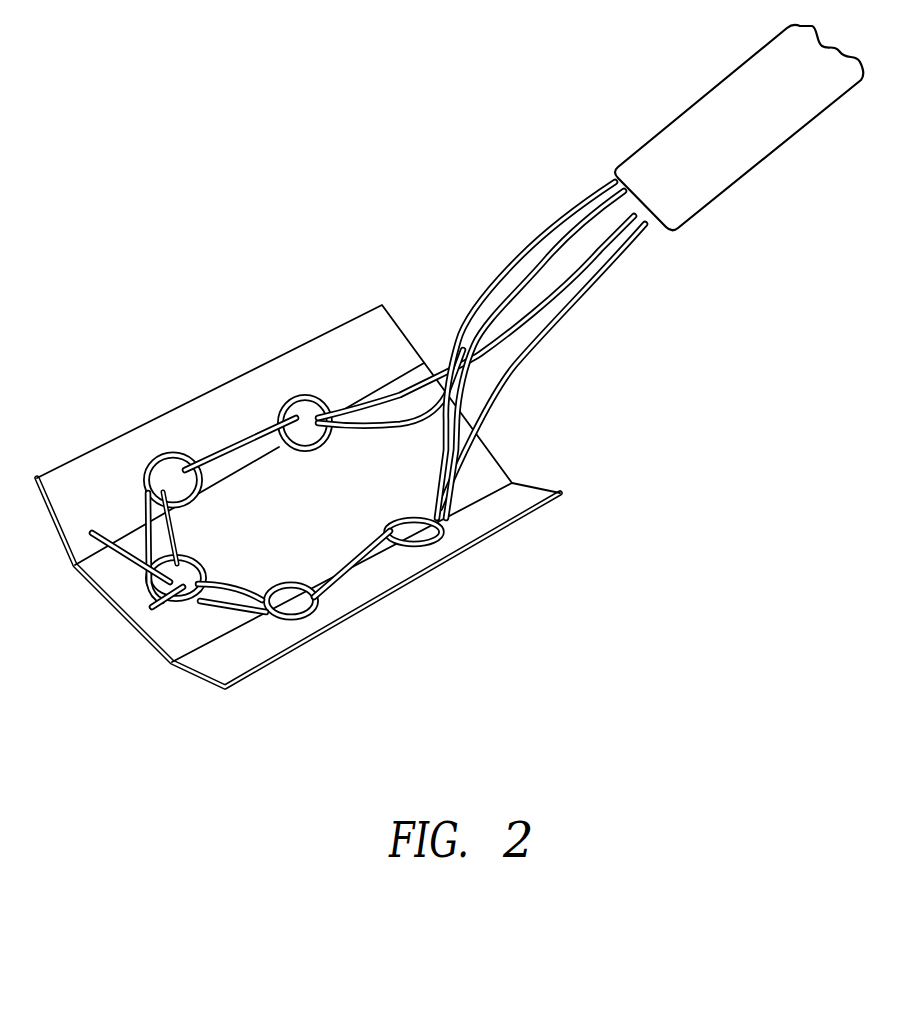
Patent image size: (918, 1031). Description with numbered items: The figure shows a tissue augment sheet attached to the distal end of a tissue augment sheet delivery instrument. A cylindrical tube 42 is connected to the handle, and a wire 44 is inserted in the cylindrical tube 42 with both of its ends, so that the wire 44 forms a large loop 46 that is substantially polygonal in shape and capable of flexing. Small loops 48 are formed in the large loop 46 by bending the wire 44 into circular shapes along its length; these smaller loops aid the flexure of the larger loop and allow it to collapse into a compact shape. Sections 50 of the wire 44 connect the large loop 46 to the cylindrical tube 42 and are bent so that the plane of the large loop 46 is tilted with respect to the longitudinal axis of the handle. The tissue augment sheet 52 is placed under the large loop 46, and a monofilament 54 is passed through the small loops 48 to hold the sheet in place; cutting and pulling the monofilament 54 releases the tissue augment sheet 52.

The cylindrical tube 42 is at (728, 97).
The wire 44 is at (477, 300).
The large loop 46 is at (257, 266).
The small loops 48 is at (162, 456).
The sections of wire 50 is at (552, 245).
The tissue augment sheet 52 is at (480, 522).
The monofilament 54 is at (490, 414).